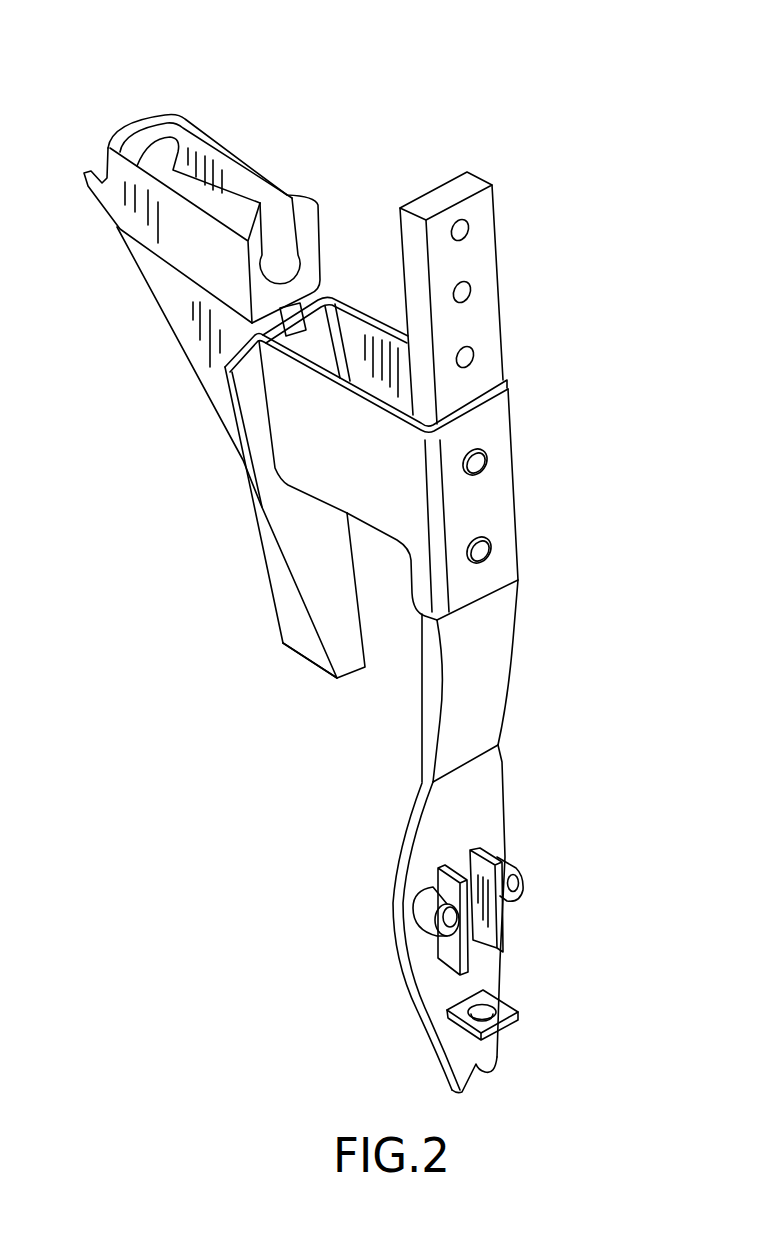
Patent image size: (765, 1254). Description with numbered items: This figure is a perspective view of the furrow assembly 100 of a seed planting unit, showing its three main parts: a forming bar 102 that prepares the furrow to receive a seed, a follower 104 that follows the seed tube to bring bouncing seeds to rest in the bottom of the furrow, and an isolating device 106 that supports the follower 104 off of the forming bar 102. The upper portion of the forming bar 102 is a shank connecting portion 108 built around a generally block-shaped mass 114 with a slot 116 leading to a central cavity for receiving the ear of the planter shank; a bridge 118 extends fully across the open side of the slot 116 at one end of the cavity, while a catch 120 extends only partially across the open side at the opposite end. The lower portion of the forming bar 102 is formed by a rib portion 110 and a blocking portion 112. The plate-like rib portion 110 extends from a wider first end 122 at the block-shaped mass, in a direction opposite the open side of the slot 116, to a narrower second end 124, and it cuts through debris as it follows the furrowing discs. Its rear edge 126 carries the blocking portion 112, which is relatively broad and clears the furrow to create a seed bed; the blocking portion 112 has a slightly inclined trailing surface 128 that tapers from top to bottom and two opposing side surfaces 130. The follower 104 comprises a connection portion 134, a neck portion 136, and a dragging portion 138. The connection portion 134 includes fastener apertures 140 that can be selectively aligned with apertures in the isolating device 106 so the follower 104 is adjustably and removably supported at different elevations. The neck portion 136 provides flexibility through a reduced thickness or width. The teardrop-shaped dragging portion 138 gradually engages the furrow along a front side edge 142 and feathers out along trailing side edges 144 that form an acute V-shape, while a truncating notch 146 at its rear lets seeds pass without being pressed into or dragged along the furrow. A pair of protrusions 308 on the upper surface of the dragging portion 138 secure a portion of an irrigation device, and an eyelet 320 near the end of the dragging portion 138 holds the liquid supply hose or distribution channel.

The furrow assembly 100 is at (469, 97).
The forming bar 102 is at (145, 341).
The follower 104 is at (542, 603).
The isolating device 106 is at (373, 281).
The shank connecting portion 108 is at (245, 130).
The rib portion 110 is at (184, 365).
The blocking portion 112 is at (262, 533).
The block-shaped mass 114 is at (115, 228).
The slot 116 is at (232, 178).
The bridge 118 is at (128, 125).
The catch 120 is at (288, 207).
The first end 122 is at (183, 283).
The second end 124 is at (243, 457).
The rear edge 126 is at (302, 302).
The trailing surface 128 is at (328, 535).
The side surfaces 130 is at (293, 602).
The connection portion 134 is at (490, 355).
The neck portion 136 is at (500, 727).
The dragging portion 138 is at (503, 828).
The fastener apertures 140 is at (470, 290).
The front side edge 142 is at (407, 823).
The trailing side edge 144 is at (413, 995).
The truncating notch 146 is at (478, 1073).
The protrusions 308 is at (432, 912).
The eyelet 320 is at (500, 1002).